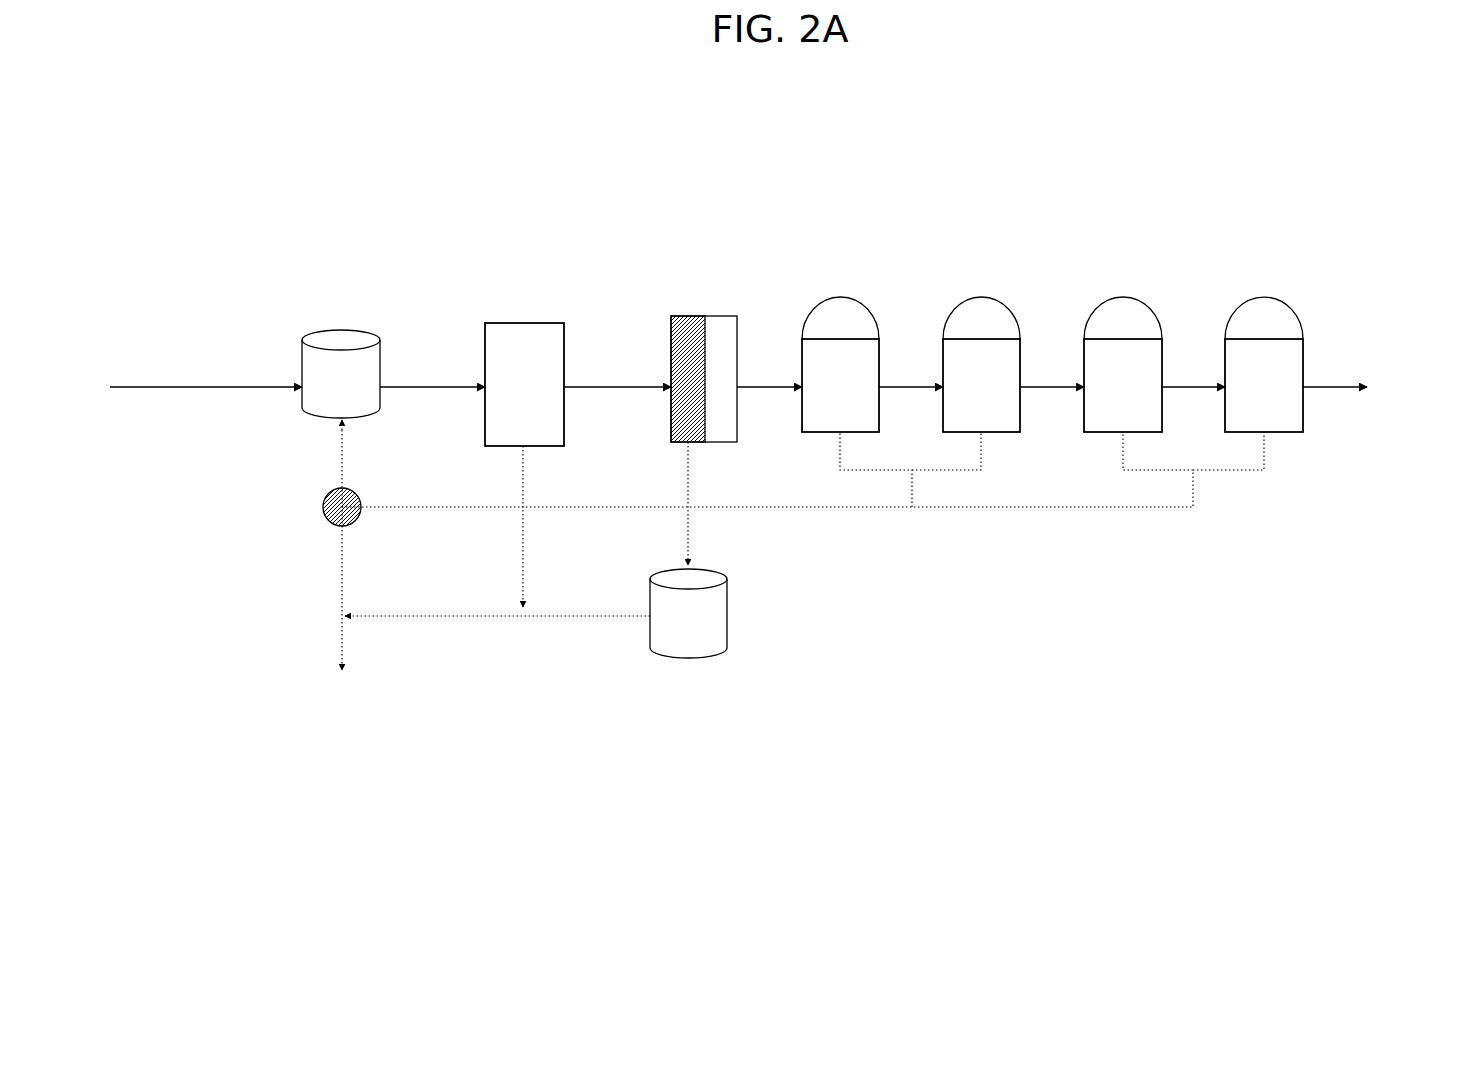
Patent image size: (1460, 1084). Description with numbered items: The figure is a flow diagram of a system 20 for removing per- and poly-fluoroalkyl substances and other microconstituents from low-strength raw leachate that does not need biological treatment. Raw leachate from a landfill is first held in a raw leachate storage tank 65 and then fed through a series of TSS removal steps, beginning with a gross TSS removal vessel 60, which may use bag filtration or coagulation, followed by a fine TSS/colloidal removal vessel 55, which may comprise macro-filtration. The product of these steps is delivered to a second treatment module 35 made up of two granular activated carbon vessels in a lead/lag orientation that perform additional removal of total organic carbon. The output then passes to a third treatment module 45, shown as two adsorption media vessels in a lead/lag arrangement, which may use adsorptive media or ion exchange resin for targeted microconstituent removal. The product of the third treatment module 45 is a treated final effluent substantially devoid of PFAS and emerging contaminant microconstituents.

The system 20 is at (243, 177).
The raw leachate storage tank 65 is at (370, 420).
The gross TSS removal vessel 60 is at (548, 447).
The fine TSS/colloidal removal vessel 55 is at (738, 443).
The second treatment module 35 is at (855, 437).
The third treatment module 45 is at (1140, 433).